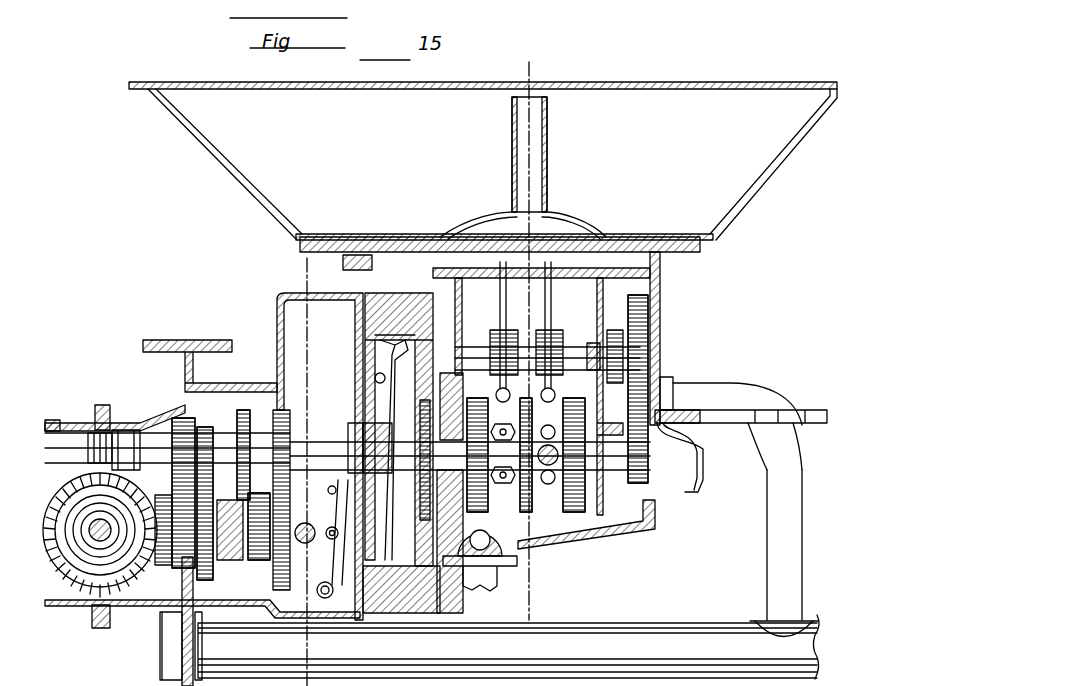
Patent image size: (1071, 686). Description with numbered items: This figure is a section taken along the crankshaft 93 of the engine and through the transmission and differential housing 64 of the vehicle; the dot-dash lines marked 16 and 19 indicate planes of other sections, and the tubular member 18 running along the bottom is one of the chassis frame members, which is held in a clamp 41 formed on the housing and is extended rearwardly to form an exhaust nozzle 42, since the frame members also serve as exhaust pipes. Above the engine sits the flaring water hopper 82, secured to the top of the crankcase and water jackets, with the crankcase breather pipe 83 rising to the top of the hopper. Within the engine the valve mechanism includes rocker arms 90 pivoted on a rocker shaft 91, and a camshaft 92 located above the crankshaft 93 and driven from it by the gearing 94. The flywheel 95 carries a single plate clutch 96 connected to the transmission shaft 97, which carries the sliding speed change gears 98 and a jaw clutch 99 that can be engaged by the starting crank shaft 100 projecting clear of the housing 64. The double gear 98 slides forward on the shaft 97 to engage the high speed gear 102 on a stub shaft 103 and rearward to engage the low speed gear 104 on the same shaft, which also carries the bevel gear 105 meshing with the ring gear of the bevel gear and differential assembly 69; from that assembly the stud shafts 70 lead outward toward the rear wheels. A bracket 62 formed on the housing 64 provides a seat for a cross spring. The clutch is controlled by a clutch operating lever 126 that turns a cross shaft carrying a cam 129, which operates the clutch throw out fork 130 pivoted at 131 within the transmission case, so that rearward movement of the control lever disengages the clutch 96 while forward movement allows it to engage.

The section line 16- 16 is at (518, 71).
The base frame / housing 18 is at (300, 270).
The section line 19- 19 is at (282, 334).
The sockets or clamps 41 is at (177, 660).
The exhaust nozzles 42 is at (150, 635).
The bracket 62 is at (187, 377).
The differential housing 64 is at (72, 418).
The bevel gear and differential assembly 69 is at (95, 497).
The stud shafts 70 is at (102, 542).
The water hopper 82 is at (768, 182).
The crankcase breather pipe 83 is at (535, 172).
The rocker arms 90 is at (550, 290).
The rocker shaft 91 is at (657, 268).
The camshaft 92 is at (585, 345).
The crankshaft 93 is at (617, 467).
The gearing 94 is at (640, 373).
The flywheel 95 is at (402, 293).
The single plate clutch 96 is at (380, 519).
The transmission shaft 97 is at (312, 448).
The sliding speed change gears 98 is at (239, 410).
The jaw clutch 99 is at (133, 437).
The starting crank shaft 100 is at (65, 450).
The high speed gear 102 is at (187, 602).
The stub shaft 103 is at (237, 535).
The low speed gear 104 is at (203, 565).
The bevel gear 105 is at (183, 457).
The clutch operating lever 126 is at (308, 543).
The cam 129 is at (332, 525).
The clutch throw out fork 130 is at (333, 495).
The pivot 131 is at (343, 595).